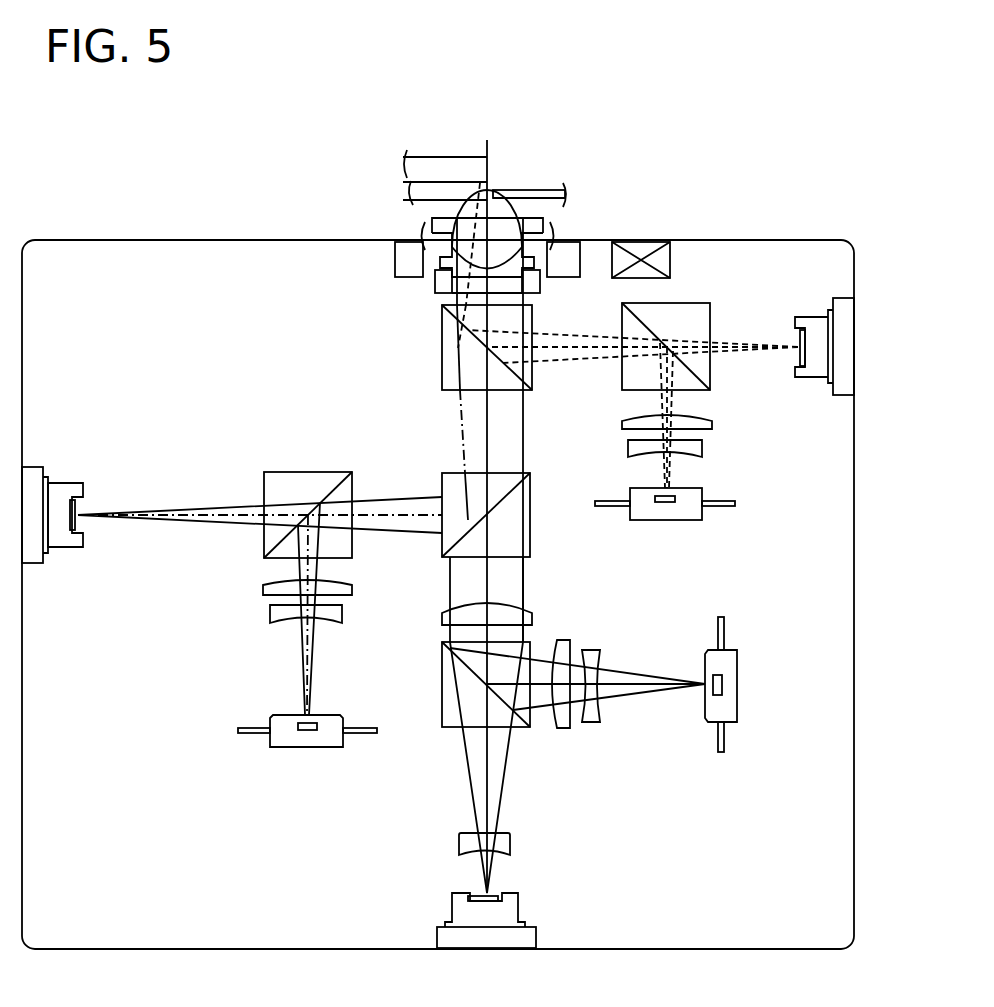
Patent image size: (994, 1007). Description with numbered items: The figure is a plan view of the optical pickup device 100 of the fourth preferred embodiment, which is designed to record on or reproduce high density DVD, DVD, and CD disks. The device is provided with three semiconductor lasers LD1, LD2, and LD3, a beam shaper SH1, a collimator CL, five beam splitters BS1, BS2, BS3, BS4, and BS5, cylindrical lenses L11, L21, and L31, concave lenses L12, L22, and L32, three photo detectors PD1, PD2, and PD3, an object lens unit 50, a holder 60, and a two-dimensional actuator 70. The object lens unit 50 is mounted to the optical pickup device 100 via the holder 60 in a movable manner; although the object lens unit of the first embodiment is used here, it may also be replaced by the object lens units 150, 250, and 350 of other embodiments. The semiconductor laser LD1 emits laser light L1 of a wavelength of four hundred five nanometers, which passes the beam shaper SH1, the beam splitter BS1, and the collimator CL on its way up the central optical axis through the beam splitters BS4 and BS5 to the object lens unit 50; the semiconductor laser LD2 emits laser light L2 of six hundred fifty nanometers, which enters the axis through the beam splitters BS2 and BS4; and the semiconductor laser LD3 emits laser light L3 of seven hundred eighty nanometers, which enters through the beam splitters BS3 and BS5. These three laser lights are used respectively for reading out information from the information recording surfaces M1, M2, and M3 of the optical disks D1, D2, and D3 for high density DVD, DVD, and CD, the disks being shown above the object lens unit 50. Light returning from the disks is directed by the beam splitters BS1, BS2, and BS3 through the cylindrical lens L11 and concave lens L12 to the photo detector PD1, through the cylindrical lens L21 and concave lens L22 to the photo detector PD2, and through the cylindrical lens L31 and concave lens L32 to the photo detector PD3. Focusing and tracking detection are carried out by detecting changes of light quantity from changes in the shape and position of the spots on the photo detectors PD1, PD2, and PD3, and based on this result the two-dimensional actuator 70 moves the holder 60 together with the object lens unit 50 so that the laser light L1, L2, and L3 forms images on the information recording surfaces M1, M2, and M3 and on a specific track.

The optical pickup device 100 is at (777, 240).
The object lens unit 50 is at (371, 412).
The object lens unit 150 is at (371, 412).
The object lens unit 250 is at (371, 412).
The object lens unit 350 is at (408, 226).
The holder 60 is at (410, 277).
The 2-dimensional actuator 70 is at (641, 242).
The information recording surface M1 is at (530, 192).
The information recording surface M2 is at (439, 187).
The information recording surface M3 is at (469, 161).
The optical disk D1 is at (565, 192).
The optical disk D2 is at (382, 173).
The optical disk D3 is at (405, 173).
The beam splitter BS1 is at (446, 727).
The beam splitter BS2 is at (303, 472).
The beam splitter BS3 is at (698, 303).
The beam splitter BS4 is at (532, 522).
The beam splitter BS5 is at (442, 350).
The laser light L1 is at (450, 575).
The laser light L2 is at (401, 500).
The laser light L3 is at (558, 362).
The cylindrical lens L11 is at (562, 640).
The concave lens L12 is at (592, 650).
The cylindrical lens L21 is at (265, 586).
The concave lens L22 is at (269, 613).
The cylindrical lens L31 is at (712, 422).
The concave lens L32 is at (703, 448).
The collimator CL is at (442, 613).
The beam shaper SH1 is at (510, 845).
The semiconductor laser LD1 is at (518, 905).
The semiconductor laser LD2 is at (64, 488).
The semiconductor laser LD3 is at (819, 370).
The photo detector PD1 is at (737, 702).
The photo detector PD2 is at (290, 747).
The photo detector PD3 is at (667, 520).